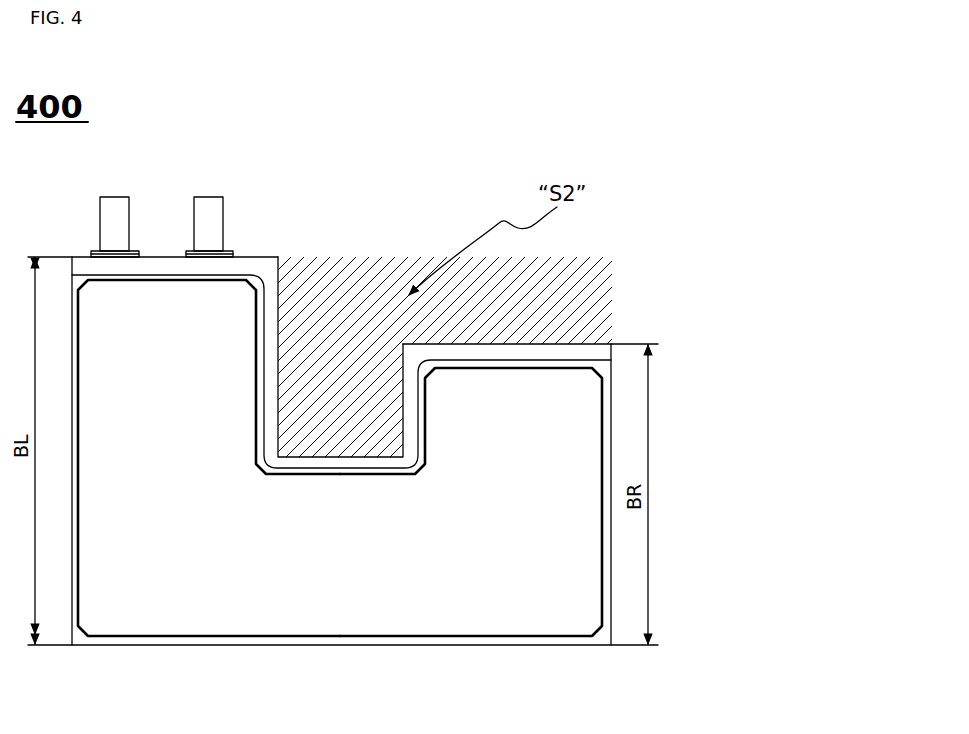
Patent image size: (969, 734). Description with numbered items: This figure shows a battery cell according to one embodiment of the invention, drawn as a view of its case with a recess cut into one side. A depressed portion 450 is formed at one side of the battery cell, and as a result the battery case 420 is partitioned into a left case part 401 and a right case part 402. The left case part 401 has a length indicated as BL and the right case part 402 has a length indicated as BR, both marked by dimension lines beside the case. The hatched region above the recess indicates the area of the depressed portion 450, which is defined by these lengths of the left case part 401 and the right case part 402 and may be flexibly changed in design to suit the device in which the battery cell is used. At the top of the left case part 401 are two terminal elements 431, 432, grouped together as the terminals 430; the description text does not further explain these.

The left case part 401 is at (165, 520).
The right case part 402 is at (520, 520).
The battery case 420 is at (327, 644).
The electrode terminals 430 is at (295, 137).
The first electrode terminal 431 is at (113, 208).
The second electrode terminal 432 is at (210, 210).
The depressed portion 450 is at (332, 448).